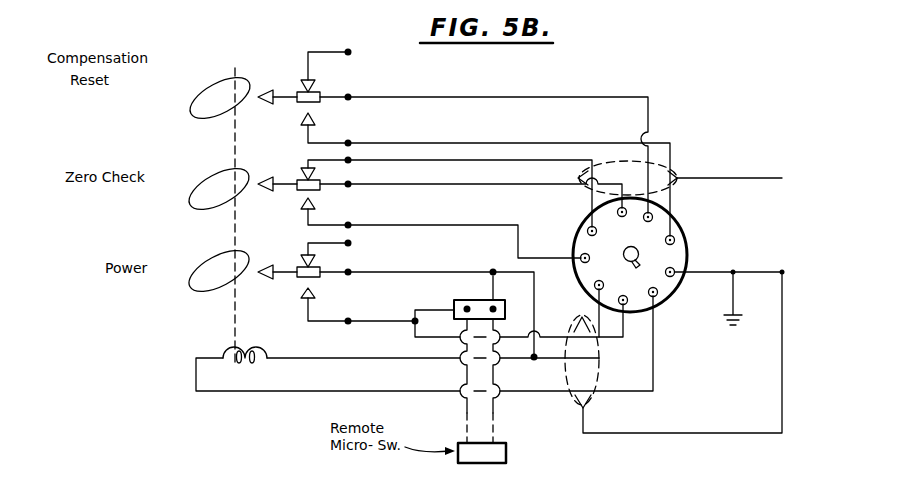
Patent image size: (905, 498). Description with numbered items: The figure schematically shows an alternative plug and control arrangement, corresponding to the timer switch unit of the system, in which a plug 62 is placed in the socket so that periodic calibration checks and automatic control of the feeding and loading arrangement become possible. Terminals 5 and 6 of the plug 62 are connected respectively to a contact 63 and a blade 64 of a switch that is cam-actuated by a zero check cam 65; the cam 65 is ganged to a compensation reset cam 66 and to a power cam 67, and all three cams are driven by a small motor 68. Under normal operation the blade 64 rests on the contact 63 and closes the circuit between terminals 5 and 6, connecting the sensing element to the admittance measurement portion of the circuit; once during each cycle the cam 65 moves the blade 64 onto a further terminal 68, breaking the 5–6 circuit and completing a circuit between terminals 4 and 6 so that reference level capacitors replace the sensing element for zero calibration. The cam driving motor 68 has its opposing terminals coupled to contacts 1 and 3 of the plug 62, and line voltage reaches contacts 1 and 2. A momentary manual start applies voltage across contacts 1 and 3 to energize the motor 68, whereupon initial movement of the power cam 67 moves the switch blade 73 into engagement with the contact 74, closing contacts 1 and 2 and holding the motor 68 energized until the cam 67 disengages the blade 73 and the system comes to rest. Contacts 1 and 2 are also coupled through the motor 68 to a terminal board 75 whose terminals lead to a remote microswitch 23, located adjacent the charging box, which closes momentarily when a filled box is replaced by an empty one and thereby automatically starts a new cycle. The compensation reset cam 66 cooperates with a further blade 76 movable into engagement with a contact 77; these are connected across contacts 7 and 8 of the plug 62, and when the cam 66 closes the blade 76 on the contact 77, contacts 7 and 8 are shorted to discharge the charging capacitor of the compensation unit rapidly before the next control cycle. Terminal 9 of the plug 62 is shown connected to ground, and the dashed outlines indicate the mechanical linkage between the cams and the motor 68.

The blade 76 is at (319, 90).
The contact 77 is at (318, 119).
The contact 63 is at (306, 171).
The blade 64 is at (299, 190).
The motor 68 is at (317, 204).
The switch blade 73 is at (299, 278).
The contact 74 is at (317, 293).
The terminal board 75 is at (460, 300).
The plug 62 is at (676, 250).
The remote microswitch 23 is at (493, 453).
The compensation reset cam 66 is at (207, 107).
The zero check cam 65 is at (207, 197).
The power cam 67 is at (207, 275).
The contact 1 is at (651, 286).
The contact 2 is at (624, 292).
The contact 3 is at (603, 281).
The terminal 4 is at (591, 258).
The terminal 5 is at (597, 236).
The terminal 6 is at (622, 222).
The contact 7 is at (649, 227).
The contact 8 is at (665, 246).
The relay socket pin 9 is at (664, 272).